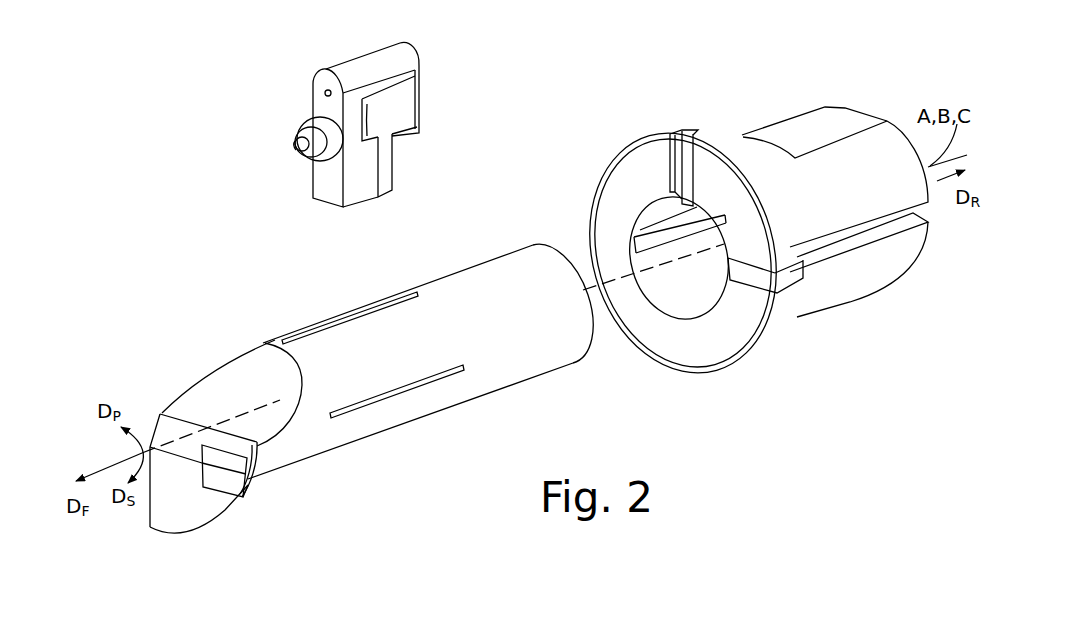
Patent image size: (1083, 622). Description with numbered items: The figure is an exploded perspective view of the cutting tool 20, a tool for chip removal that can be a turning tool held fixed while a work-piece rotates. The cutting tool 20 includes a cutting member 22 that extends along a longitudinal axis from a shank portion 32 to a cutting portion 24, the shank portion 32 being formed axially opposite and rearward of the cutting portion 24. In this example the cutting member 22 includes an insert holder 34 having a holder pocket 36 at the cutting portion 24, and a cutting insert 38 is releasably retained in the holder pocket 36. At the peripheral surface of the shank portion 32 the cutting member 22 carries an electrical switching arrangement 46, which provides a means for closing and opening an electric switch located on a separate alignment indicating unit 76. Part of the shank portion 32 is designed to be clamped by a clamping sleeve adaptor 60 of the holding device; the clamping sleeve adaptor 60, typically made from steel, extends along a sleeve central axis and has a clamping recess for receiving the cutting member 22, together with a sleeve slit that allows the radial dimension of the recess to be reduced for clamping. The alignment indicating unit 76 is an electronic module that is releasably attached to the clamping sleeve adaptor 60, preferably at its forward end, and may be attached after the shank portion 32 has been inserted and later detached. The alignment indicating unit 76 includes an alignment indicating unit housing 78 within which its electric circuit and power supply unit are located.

The cutting tool 20 is at (745, 208).
The cutting member 22 is at (339, 370).
The insert holder 34 is at (339, 370).
The cutting portion 24 is at (200, 442).
The shank portion 32 is at (420, 338).
The holder pocket 36 is at (193, 446).
The cutting insert 38 is at (258, 501).
The electrical switching arrangement 46 is at (404, 279).
The clamping sleeve adaptor 60 is at (823, 338).
The alignment indicating unit 76 is at (359, 105).
The alignment indicating unit housing 78 is at (312, 64).